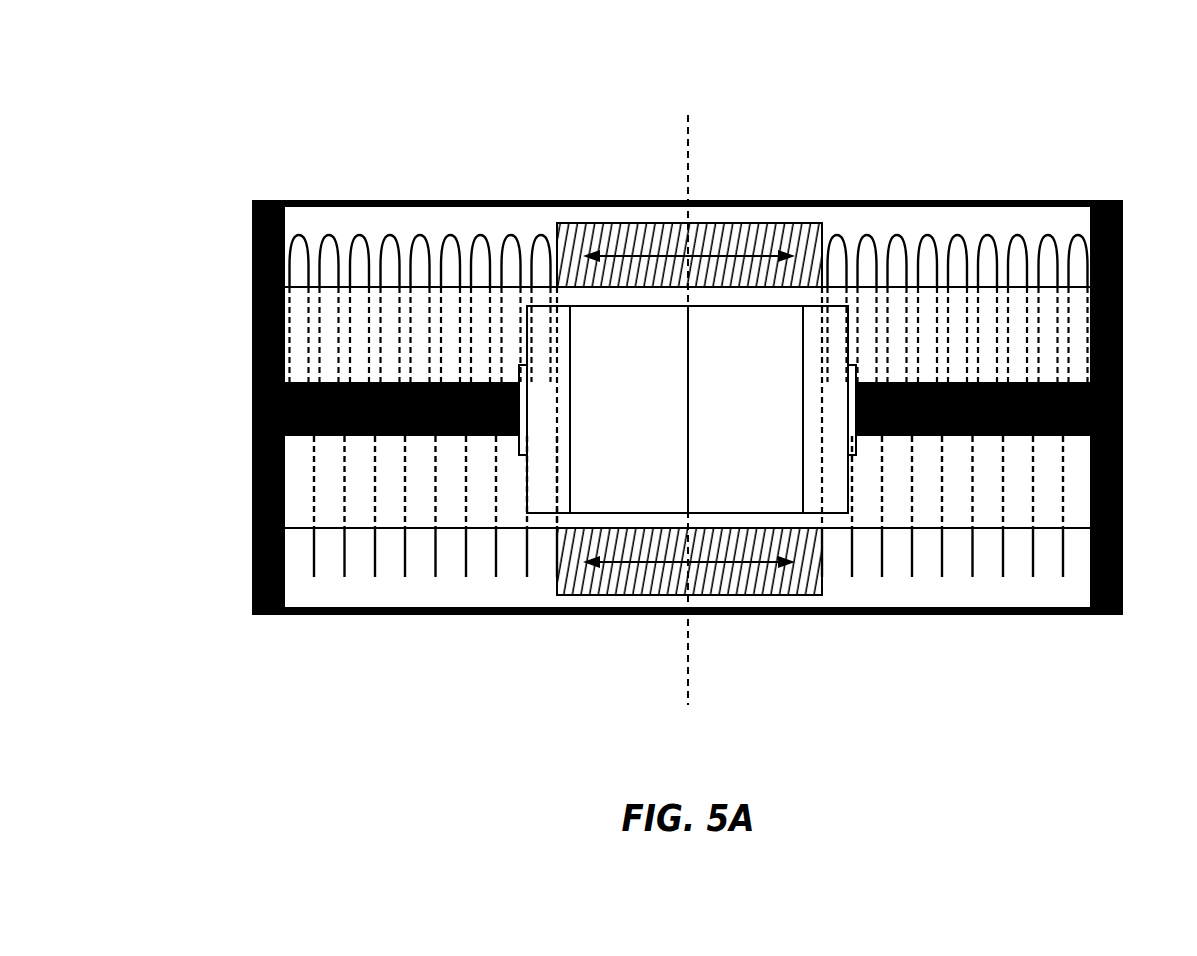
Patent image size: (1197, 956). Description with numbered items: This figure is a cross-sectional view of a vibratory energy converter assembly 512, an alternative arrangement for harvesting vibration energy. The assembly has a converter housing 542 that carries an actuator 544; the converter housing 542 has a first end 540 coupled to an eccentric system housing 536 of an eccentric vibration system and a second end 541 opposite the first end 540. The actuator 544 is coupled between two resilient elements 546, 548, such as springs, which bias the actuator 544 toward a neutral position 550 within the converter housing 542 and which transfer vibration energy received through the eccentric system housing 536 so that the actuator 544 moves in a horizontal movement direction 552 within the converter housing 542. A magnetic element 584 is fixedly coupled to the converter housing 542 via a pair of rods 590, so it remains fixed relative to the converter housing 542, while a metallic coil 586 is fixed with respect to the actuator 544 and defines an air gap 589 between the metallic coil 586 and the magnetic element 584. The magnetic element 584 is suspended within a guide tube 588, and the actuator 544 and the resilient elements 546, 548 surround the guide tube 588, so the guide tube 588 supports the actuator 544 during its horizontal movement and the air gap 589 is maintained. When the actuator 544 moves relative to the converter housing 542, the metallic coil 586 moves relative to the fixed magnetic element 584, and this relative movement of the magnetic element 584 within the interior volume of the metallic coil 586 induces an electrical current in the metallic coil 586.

The vibratory energy converter assembly 512 is at (214, 69).
The eccentric system housing 536 is at (1125, 243).
The first end 540 is at (1123, 614).
The second end 541 is at (252, 613).
The converter housing 542 is at (484, 206).
The actuator 544 is at (768, 226).
The resilient element 546 is at (971, 570).
The resilient element 548 is at (375, 565).
The neutral position 550 is at (686, 178).
The horizontal movement direction 552 is at (640, 260).
The magnetic element 584 is at (747, 478).
The metallic coil 586 is at (658, 580).
The guide tube 588 is at (484, 528).
The air gap 589 is at (571, 294).
The rods 590 is at (992, 435).